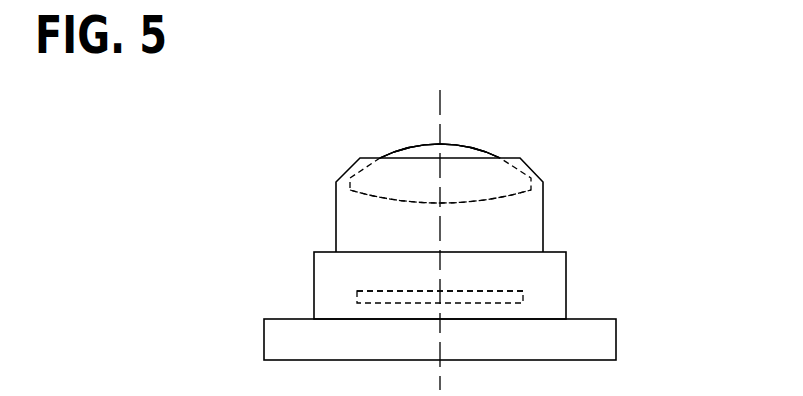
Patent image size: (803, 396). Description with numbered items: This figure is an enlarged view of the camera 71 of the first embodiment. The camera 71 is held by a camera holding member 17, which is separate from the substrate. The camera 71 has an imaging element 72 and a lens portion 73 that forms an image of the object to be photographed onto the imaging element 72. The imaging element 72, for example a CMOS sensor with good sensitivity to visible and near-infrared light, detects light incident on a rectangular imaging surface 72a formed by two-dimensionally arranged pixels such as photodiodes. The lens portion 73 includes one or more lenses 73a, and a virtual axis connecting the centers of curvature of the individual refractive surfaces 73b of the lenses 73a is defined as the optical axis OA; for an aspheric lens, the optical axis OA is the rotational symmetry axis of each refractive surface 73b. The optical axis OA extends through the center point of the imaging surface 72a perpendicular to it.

The optical axis OA is at (442, 113).
The camera holding member 17 is at (277, 319).
The camera 71 is at (335, 149).
The imaging element 72 is at (523, 296).
The imaging surface 72a is at (490, 289).
The lens portion 73 is at (500, 158).
The lens 73a is at (440, 151).
The refractive surface 73b is at (492, 206).